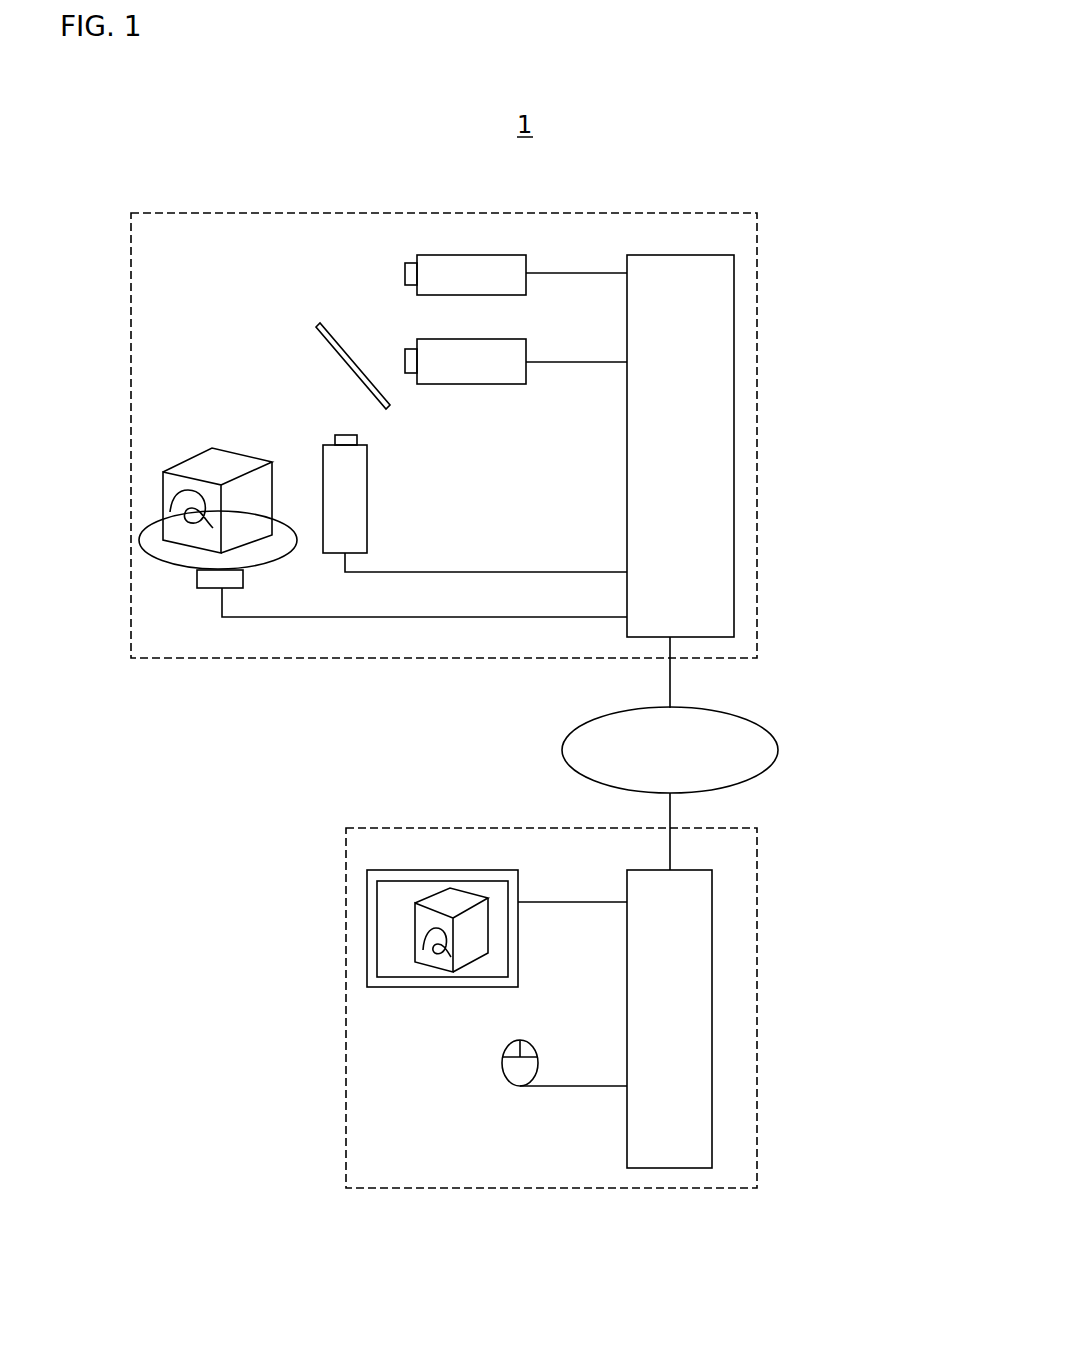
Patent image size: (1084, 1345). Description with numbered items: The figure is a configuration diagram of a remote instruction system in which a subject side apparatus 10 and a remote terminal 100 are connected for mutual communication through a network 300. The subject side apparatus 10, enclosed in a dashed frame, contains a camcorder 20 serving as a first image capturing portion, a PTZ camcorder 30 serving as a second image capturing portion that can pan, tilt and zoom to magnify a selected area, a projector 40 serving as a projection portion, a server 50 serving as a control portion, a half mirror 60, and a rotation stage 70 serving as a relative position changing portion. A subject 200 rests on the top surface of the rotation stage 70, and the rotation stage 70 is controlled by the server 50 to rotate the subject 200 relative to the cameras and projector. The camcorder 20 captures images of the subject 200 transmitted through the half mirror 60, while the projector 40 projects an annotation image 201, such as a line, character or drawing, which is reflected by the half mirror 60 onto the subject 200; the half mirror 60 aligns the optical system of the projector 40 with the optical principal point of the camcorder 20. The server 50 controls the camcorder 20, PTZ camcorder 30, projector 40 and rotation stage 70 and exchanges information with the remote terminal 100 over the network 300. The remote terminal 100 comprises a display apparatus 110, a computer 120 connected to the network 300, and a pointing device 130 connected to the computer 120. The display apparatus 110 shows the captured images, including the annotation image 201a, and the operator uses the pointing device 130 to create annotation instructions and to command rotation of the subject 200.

The subject side apparatus 10 is at (457, 212).
The camcorder 20 is at (427, 384).
The PTZ camcorder 30 is at (423, 255).
The projector 40 is at (368, 507).
The server 50 is at (687, 255).
The half mirror 60 is at (338, 343).
The rotation stage 70 is at (283, 515).
The remote terminal 100 is at (733, 828).
The display apparatus 110 is at (483, 870).
The computer 120 is at (683, 870).
The pointing device 130 is at (533, 1040).
The subject 200 is at (227, 448).
The annotation image 201 is at (176, 493).
The annotation image 201a is at (423, 952).
The network 300 is at (740, 708).